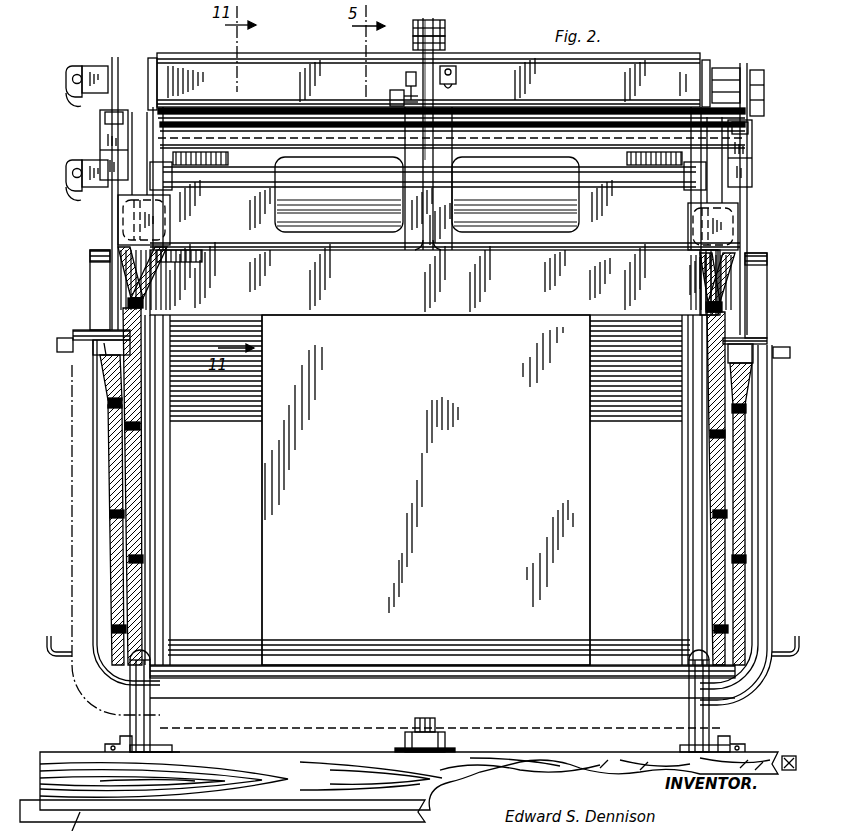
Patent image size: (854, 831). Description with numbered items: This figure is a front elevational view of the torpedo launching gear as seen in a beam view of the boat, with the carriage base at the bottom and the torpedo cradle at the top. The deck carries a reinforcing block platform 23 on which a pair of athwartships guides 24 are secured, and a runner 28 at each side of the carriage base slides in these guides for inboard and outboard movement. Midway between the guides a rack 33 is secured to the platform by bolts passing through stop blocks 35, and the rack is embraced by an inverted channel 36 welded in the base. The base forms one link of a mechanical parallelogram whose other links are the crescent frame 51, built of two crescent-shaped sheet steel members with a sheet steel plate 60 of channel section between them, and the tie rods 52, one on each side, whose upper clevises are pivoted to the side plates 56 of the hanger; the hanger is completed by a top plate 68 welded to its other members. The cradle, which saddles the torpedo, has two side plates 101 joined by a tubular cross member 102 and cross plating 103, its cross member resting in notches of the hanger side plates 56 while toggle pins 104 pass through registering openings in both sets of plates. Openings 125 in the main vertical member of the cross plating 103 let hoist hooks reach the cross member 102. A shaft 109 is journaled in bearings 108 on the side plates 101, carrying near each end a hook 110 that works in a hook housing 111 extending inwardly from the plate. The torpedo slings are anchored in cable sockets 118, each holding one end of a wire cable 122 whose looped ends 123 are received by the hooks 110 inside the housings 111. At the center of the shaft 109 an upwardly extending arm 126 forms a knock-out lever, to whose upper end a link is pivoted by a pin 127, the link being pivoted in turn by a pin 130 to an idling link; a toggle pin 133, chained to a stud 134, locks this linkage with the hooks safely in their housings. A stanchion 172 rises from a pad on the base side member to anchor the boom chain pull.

The reinforcing block platform 23 is at (64, 762).
The guides 24 is at (120, 748).
The runner 28 is at (162, 745).
The rack 33 is at (410, 742).
The stop blocks 35 is at (437, 730).
The inverted channel 36 is at (452, 748).
The frame 51 is at (180, 518).
The tie rods 52 is at (150, 580).
The side plate 56 is at (152, 58).
The sheet steel plate 60 is at (430, 377).
The top plate 68 is at (284, 56).
The side plates 101 is at (112, 202).
The tubular cross member 102 is at (562, 112).
The cross plating 103 is at (238, 230).
The toggle pins 104 is at (87, 70).
The bearings 108 is at (105, 140).
The shaft 109 is at (270, 124).
The hook 110 is at (113, 236).
The hook housing 111 is at (120, 222).
The cable sockets 118 is at (100, 356).
The wire cable 122 is at (125, 462).
The looped ends 123 is at (128, 262).
The openings 125 is at (226, 158).
The arm 126 is at (436, 92).
The pin 127 is at (446, 30).
The pin 130 is at (447, 43).
The toggle pin 133 is at (457, 75).
The stud 134 is at (390, 98).
The stanchion 172 is at (78, 412).